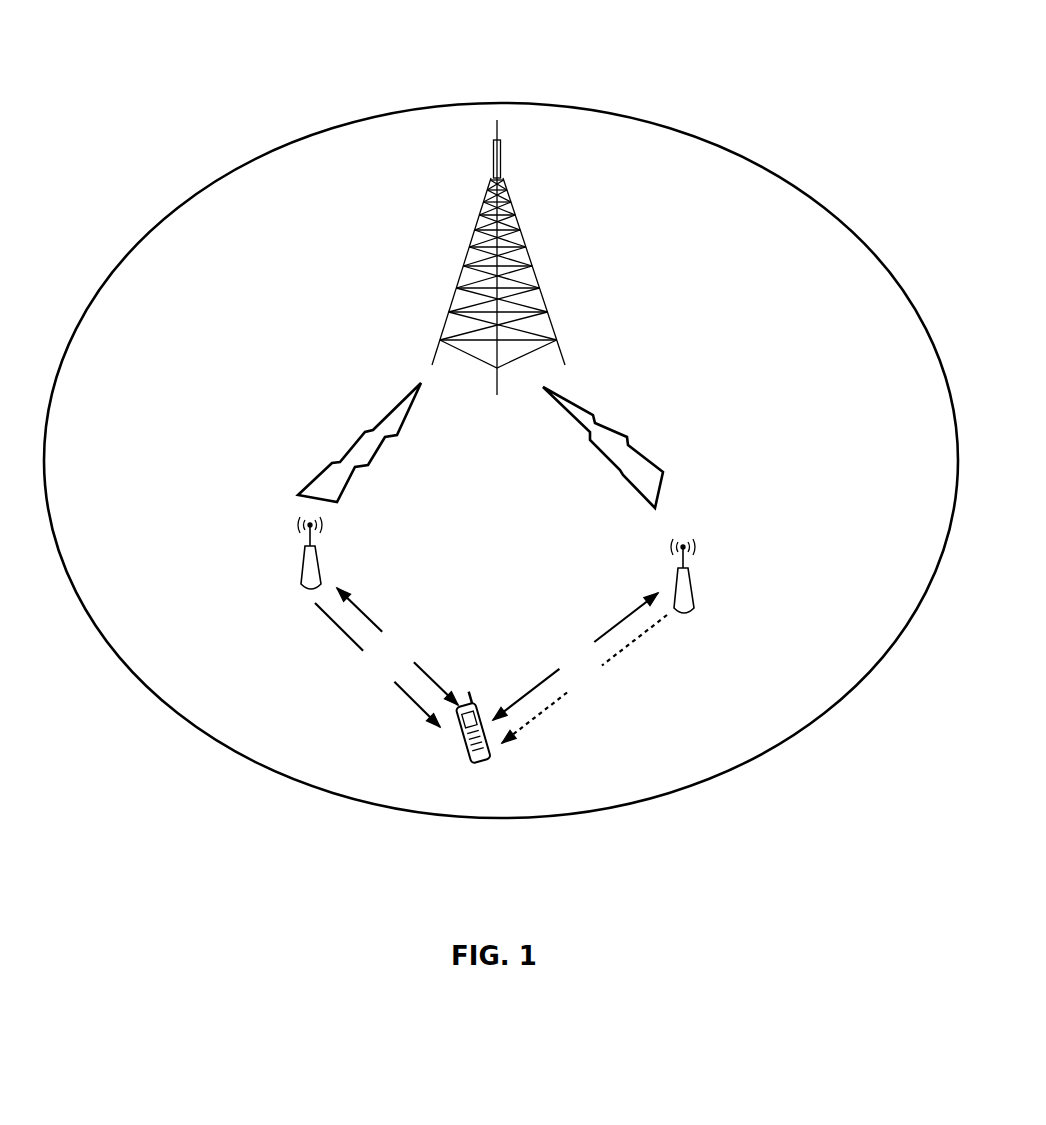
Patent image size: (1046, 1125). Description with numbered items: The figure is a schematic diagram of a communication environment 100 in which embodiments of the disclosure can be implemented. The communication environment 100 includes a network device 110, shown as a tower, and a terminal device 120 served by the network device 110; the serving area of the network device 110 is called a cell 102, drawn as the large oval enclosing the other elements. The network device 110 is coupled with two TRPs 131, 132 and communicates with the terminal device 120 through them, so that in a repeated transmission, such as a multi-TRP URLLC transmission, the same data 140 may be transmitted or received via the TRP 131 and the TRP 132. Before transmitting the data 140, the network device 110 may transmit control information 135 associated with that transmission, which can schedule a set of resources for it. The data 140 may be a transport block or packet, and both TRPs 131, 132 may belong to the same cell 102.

The communication environment 100 is at (124, 42).
The cell 102 is at (737, 153).
The network device 110 is at (540, 305).
The terminal device 120 is at (485, 742).
The TRP 131 is at (313, 566).
The TRP 132 is at (690, 590).
The control information 135 is at (491, 673).
The data 140 is at (497, 654).